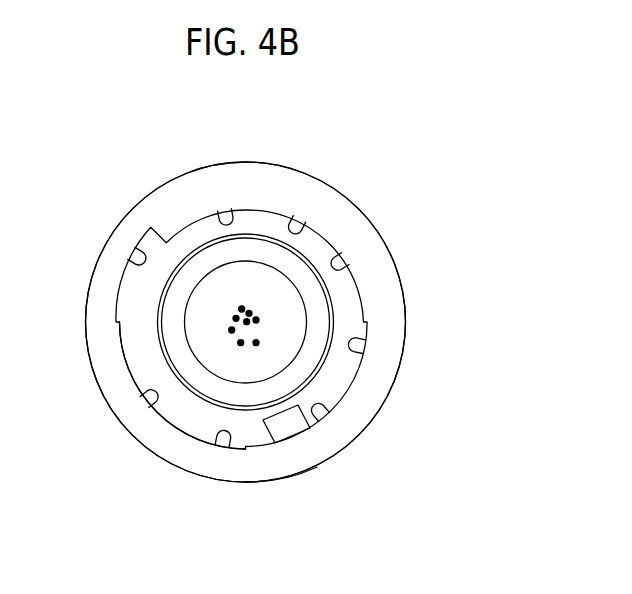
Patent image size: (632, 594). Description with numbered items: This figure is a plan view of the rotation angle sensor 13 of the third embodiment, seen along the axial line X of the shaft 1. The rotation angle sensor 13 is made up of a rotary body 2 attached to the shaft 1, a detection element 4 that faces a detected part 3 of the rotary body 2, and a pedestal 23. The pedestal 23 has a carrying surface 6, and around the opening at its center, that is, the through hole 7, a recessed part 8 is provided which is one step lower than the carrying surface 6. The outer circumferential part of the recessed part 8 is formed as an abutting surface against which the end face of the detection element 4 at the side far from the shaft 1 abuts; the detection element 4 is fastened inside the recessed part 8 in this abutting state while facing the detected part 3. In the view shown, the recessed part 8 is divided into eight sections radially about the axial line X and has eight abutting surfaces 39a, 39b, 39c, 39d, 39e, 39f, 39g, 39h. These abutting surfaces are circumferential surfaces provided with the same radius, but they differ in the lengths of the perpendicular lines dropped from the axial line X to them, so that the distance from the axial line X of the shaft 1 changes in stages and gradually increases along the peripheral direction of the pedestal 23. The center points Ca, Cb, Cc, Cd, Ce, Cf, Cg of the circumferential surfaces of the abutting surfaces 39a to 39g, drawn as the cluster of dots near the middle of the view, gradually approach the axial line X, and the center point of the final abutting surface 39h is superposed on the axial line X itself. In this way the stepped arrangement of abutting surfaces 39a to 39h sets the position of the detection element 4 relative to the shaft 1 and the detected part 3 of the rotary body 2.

The shaft 1 is at (288, 318).
The rotary body 2 is at (150, 228).
The detected part 3 is at (193, 280).
The detection element 4 is at (280, 433).
The carrying surface 6 is at (103, 358).
The through hole 7 is at (157, 331).
The recessed part 8 is at (183, 413).
The rotation angle sensor 13 is at (397, 153).
The pedestal 23 is at (317, 467).
The abutting surface 39a is at (219, 212).
The abutting surface 39b is at (294, 220).
The abutting surface 39c is at (338, 262).
The abutting surface 39d is at (355, 345).
The abutting surface 39e is at (323, 413).
The abutting surface 39f is at (225, 442).
The abutting surface 39g is at (146, 399).
The abutting surface 39h is at (137, 257).
The center point Ca is at (256, 343).
The center point Cb is at (241, 343).
The center point Cc is at (232, 330).
The center point Cd is at (236, 318).
The center point Ce is at (242, 309).
The center point Cf is at (249, 313).
The center point Cg is at (256, 320).